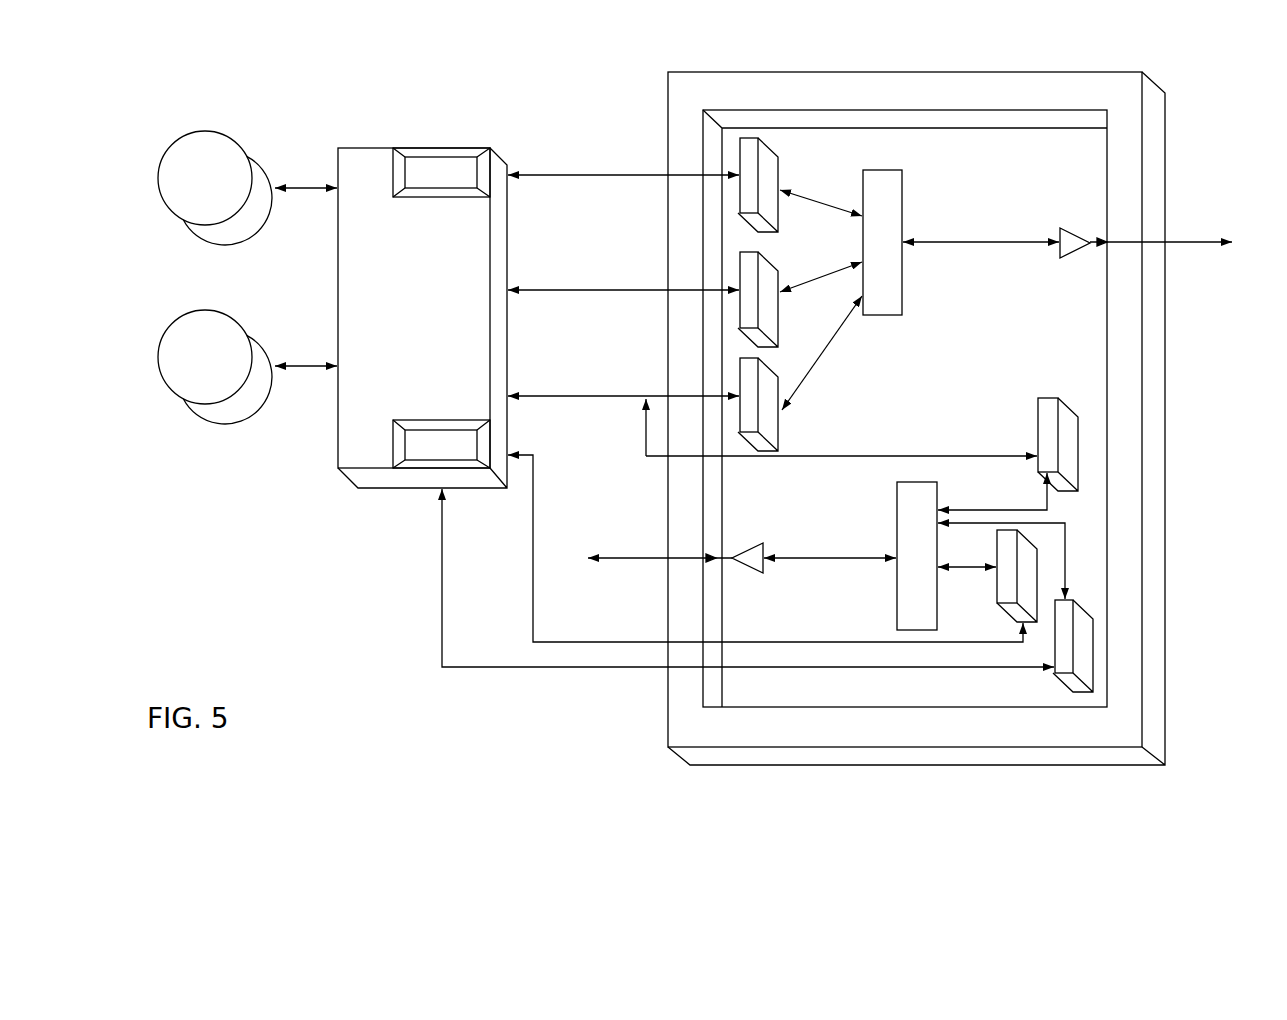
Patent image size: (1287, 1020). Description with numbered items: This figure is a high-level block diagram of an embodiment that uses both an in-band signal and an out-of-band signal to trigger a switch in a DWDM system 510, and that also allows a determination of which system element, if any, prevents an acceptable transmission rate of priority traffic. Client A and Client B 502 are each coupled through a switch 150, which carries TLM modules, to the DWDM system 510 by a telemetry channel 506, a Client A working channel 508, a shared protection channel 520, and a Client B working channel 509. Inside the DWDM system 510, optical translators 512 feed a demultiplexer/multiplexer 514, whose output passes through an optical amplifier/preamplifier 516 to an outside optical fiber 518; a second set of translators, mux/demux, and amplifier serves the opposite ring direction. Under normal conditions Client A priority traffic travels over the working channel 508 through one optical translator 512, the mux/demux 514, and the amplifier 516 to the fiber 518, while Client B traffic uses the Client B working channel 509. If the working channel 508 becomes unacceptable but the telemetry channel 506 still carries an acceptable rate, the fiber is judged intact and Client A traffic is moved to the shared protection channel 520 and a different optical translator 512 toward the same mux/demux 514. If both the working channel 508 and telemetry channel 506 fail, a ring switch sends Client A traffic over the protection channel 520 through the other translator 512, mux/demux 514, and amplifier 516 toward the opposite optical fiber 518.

The switch 150 is at (360, 148).
The client 502 is at (247, 280).
The telemetry channel 506 is at (748, 412).
The Client A working channel 508 is at (562, 292).
The Client B working channel 509 is at (533, 572).
The DWDM system 510 is at (915, 72).
The optical translators 512 is at (1007, 357).
The demultiplexer/multiplexer 514 is at (922, 411).
The optical amplifier/preamplifier 516 is at (913, 410).
The optical fiber 518 is at (901, 381).
The shared protection channel 520 is at (562, 398).